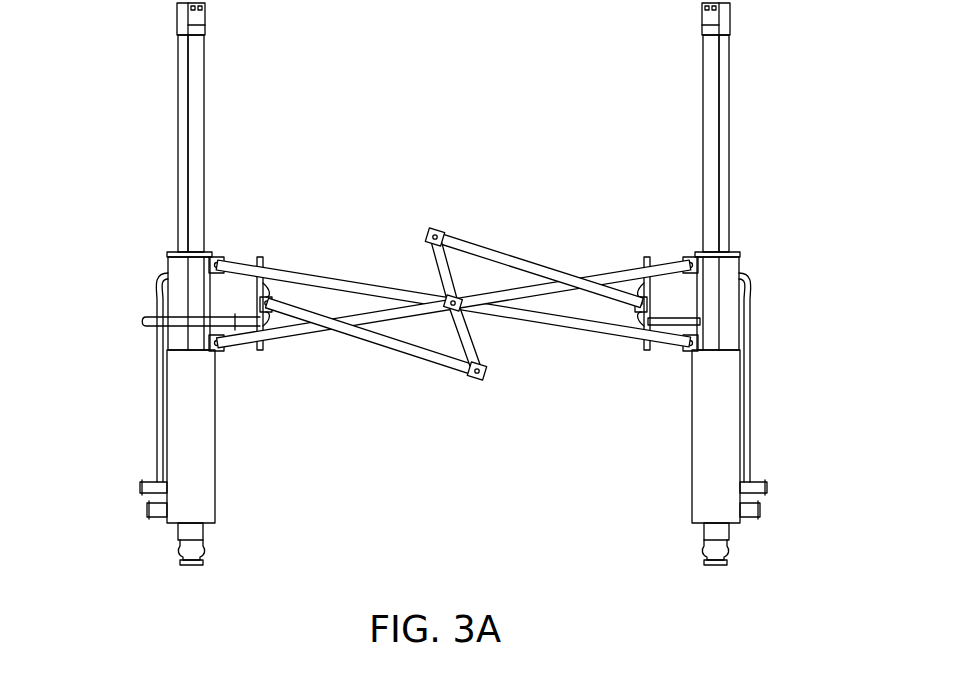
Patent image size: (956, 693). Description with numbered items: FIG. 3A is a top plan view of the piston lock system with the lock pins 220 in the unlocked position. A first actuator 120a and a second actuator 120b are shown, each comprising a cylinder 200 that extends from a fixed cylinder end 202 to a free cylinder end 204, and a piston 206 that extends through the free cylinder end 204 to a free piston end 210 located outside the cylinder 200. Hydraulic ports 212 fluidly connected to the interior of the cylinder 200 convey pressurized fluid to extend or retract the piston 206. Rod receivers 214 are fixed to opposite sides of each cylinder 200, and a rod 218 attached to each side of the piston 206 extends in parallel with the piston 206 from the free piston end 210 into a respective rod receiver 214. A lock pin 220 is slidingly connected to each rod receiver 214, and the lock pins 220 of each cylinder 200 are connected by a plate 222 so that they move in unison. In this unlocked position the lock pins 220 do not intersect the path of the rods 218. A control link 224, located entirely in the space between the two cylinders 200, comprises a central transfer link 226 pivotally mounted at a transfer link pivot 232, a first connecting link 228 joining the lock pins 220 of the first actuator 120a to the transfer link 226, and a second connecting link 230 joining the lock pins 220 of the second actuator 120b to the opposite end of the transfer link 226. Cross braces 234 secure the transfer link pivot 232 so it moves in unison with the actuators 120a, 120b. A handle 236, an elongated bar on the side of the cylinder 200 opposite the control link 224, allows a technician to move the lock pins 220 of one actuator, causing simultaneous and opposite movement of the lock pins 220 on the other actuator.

The first actuator 120a is at (103, 537).
The second actuator 120b is at (604, 507).
The cylinder 200 is at (188, 393).
The fixed cylinder end 202 is at (197, 550).
The free cylinder end 204 is at (172, 253).
The piston 206 is at (187, 147).
The free piston end 210 is at (188, 22).
The hydraulic ports 212 is at (147, 510).
The rod receiver 214 is at (188, 333).
The rod 218 is at (198, 120).
The lock pin 220 is at (236, 348).
The plate 222 is at (273, 318).
The control link 224 is at (453, 285).
The transfer link 226 is at (470, 345).
The first connecting link 228 is at (398, 345).
The second connecting link 230 is at (517, 260).
The transfer link pivot 232 is at (444, 284).
The cross braces 234 is at (323, 280).
The handle 236 is at (135, 321).